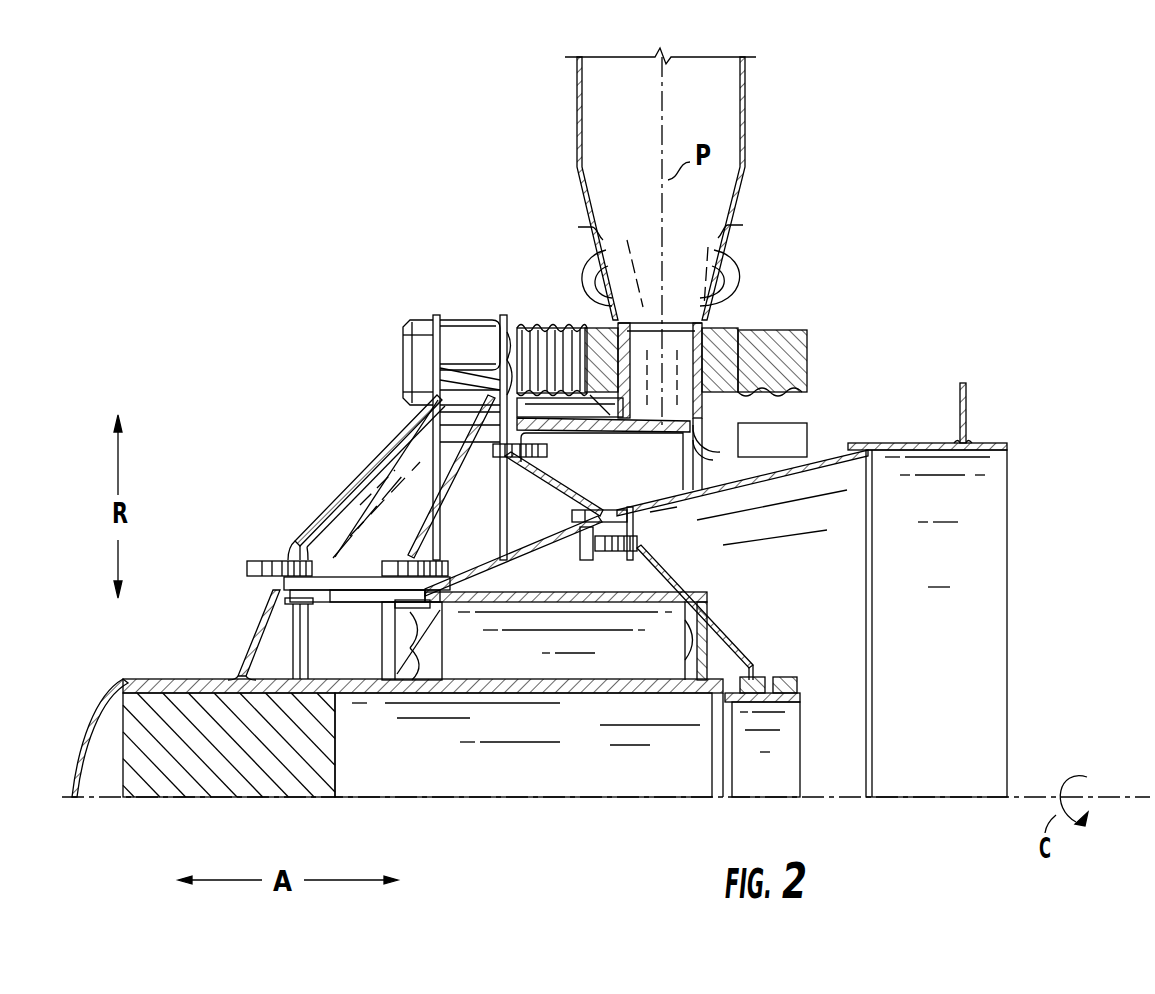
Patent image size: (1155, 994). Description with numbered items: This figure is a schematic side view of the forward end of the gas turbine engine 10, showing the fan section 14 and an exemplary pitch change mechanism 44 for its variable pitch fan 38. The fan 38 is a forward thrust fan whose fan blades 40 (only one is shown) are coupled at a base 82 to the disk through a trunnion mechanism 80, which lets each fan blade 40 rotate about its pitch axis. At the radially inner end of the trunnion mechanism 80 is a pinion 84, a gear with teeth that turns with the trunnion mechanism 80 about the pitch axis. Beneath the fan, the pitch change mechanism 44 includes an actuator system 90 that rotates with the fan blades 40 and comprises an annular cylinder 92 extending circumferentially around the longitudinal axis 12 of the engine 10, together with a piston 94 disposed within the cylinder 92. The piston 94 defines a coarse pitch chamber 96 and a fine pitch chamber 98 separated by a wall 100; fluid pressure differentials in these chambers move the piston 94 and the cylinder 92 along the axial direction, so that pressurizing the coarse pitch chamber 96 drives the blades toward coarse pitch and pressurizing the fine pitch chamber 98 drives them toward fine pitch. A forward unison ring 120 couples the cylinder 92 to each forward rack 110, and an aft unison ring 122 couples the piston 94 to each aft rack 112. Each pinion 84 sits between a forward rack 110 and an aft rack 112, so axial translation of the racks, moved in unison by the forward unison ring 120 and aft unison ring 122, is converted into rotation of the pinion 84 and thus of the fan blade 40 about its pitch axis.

The gas turbine engine 10 is at (1000, 214).
The longitudinal axis 12 is at (83, 800).
The fan section 14 is at (280, 230).
The fan 38 is at (865, 254).
The fan blade 40 is at (745, 112).
The pitch change mechanism 44 is at (896, 345).
The trunnion mechanism 80 is at (574, 220).
The base 82 is at (675, 330).
The pinion 84 is at (742, 322).
The actuator system 90 is at (825, 653).
The cylinder 92 is at (637, 590).
The piston 94 is at (640, 685).
The coarse pitch chamber 96 is at (320, 634).
The fine pitch chamber 98 is at (566, 680).
The wall 100 is at (430, 676).
The forward rack 110 is at (410, 347).
The aft rack 112 is at (537, 325).
The forward unison ring 120 is at (392, 423).
The aft unison ring 122 is at (621, 440).